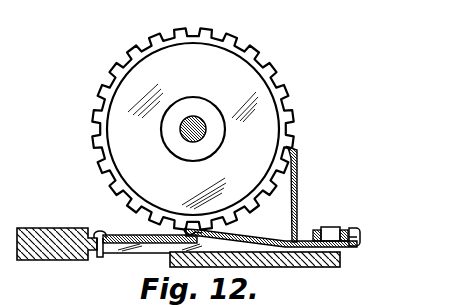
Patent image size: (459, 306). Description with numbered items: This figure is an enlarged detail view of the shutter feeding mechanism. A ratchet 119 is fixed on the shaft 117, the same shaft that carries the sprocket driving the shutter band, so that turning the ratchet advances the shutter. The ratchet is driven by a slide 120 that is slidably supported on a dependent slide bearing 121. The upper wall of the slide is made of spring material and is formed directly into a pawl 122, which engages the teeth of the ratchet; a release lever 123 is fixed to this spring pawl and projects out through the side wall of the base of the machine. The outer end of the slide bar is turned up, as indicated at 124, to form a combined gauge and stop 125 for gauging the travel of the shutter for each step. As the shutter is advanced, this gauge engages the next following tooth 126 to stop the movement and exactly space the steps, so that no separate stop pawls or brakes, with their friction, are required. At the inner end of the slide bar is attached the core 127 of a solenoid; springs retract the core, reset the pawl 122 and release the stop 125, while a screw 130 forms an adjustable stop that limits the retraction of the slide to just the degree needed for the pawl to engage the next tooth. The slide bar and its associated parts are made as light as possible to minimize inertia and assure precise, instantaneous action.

The shaft 117 is at (203, 120).
The ratchet 119 is at (107, 177).
The slide 120 is at (148, 245).
The dependent slide bearing 121 is at (283, 263).
The pawl 122 is at (197, 228).
The release lever 123 is at (357, 247).
The turned-up outer end of the slide bar 124 is at (300, 237).
The combined gauge and stop 125 is at (297, 155).
The tooth 126 is at (295, 147).
The core 127 is at (48, 252).
The screw 130 is at (346, 228).